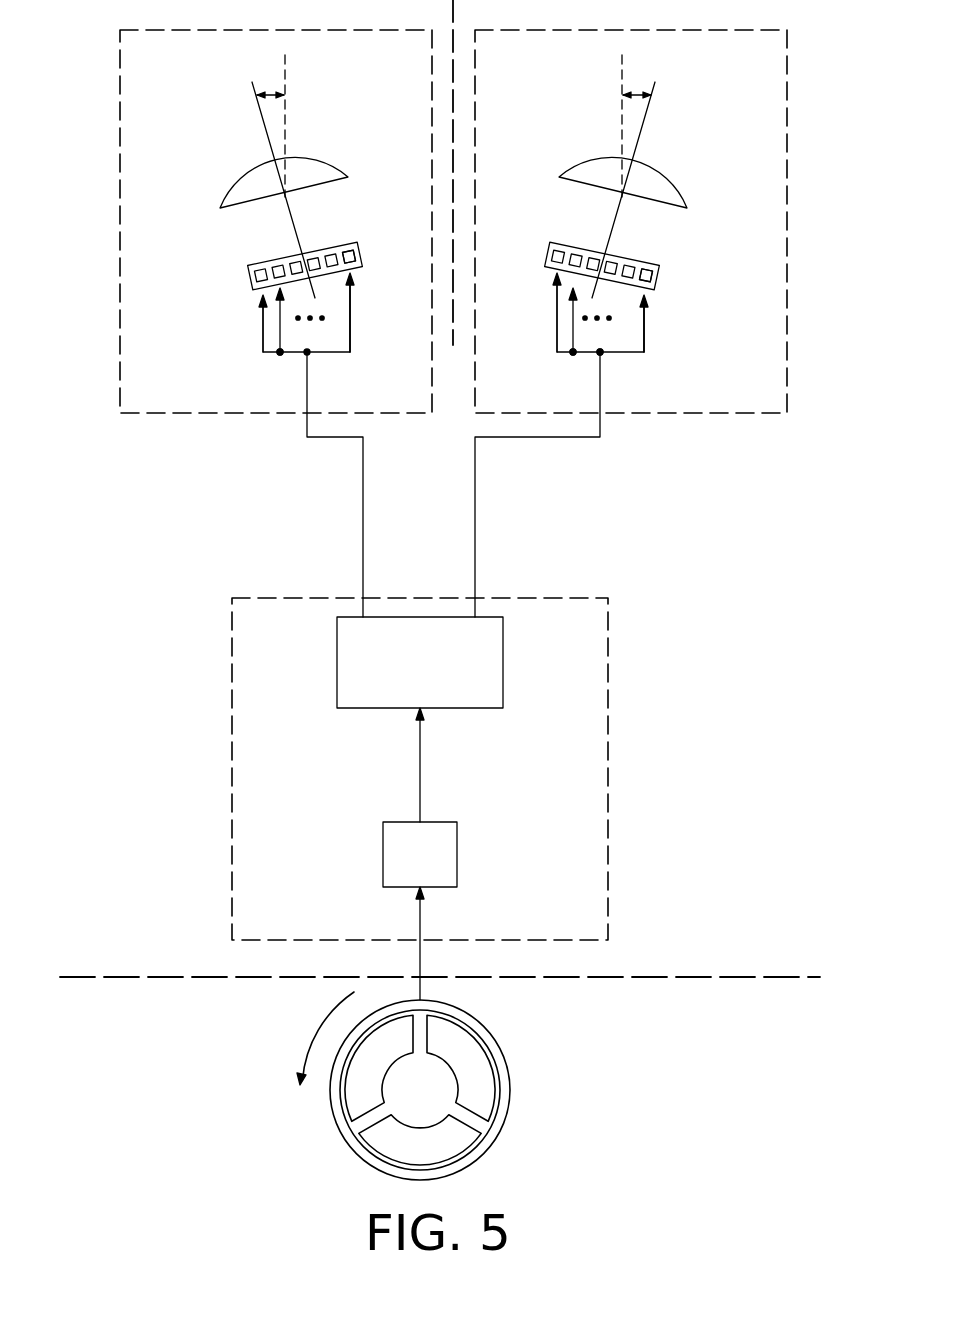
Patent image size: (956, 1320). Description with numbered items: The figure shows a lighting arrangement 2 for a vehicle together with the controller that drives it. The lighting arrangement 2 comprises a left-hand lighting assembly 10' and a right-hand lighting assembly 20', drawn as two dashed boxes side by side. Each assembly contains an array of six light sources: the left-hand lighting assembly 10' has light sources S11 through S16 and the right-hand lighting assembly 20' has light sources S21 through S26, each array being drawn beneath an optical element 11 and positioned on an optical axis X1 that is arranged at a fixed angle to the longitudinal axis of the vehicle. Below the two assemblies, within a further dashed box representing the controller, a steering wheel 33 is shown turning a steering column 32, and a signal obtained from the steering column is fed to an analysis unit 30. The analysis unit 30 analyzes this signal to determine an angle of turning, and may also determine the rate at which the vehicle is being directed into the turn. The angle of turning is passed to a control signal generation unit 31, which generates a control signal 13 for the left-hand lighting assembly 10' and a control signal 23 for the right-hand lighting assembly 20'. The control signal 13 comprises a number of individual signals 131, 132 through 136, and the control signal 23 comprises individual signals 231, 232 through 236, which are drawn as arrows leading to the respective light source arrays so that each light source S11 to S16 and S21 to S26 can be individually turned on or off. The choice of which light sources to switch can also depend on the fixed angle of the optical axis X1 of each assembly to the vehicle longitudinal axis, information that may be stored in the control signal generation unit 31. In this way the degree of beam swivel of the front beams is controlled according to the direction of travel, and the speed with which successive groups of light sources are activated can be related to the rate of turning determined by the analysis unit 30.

The lighting arrangement 2 is at (698, 762).
The left-hand lighting assembly 10' is at (276, 262).
The right-hand lighting assembly 20' is at (639, 263).
The lens 11 is at (243, 193).
The optical axis X1 is at (261, 115).
The light source S11 is at (248, 262).
The light source S16 is at (356, 243).
The light source S21 is at (551, 243).
The light source S26 is at (659, 262).
The signal 131 is at (263, 333).
The signal 132 is at (263, 352).
The signal 136 is at (351, 317).
The signal 231 is at (557, 330).
The signal 232 is at (557, 342).
The signal 236 is at (644, 330).
The control signal 13 is at (363, 530).
The control signal 23 is at (475, 520).
The control signal generation unit 31 is at (503, 648).
The analysis unit 30 is at (457, 843).
The steering shaft 32 is at (420, 960).
The steering wheel 33 is at (510, 1078).